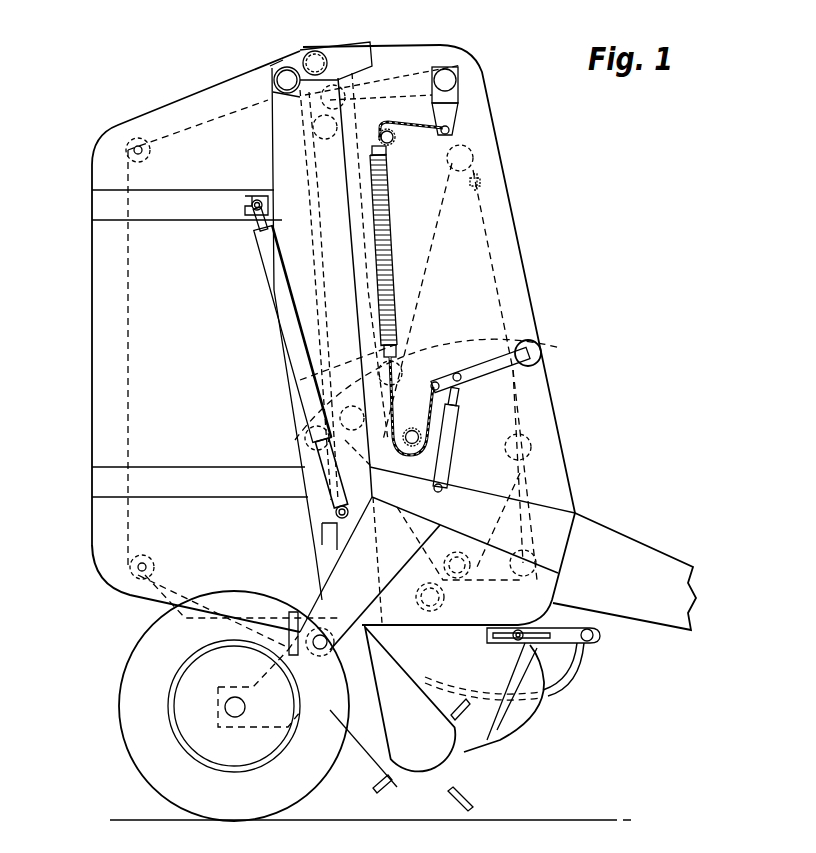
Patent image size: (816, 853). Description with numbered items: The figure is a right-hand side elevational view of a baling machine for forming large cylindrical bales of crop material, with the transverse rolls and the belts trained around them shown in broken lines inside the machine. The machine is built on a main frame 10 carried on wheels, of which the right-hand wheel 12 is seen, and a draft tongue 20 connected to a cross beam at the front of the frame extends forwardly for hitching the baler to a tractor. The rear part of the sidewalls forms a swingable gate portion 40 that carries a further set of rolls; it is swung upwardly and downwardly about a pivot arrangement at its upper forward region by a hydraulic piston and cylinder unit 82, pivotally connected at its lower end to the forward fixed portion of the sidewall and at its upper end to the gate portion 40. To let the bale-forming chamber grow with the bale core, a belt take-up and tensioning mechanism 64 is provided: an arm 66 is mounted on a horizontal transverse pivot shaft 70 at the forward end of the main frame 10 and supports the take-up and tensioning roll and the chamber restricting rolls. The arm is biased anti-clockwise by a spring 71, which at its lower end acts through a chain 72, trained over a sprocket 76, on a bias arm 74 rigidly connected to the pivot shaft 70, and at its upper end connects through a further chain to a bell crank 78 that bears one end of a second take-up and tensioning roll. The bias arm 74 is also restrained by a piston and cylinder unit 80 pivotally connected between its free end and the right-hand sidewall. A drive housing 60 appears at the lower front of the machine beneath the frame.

The main frame 10 is at (156, 74).
The wheel 12 is at (125, 660).
The draft tongue 20 is at (651, 593).
The rearward swingable gate portion 40 is at (100, 347).
The drive gear housing 60 is at (434, 763).
The belt take-up and tensioning mechanism 64 is at (406, 262).
The arm 66 is at (478, 424).
The horizontal transverse pivot shaft 70 is at (541, 353).
The spring 71 is at (390, 187).
The chain 72 is at (456, 410).
The bias arm 74 is at (488, 337).
The sprocket 76 is at (410, 458).
The bell crank 78 is at (408, 72).
The piston and cylinder unit 80 is at (457, 432).
The hydraulic piston and cylinder unit 82 is at (277, 296).